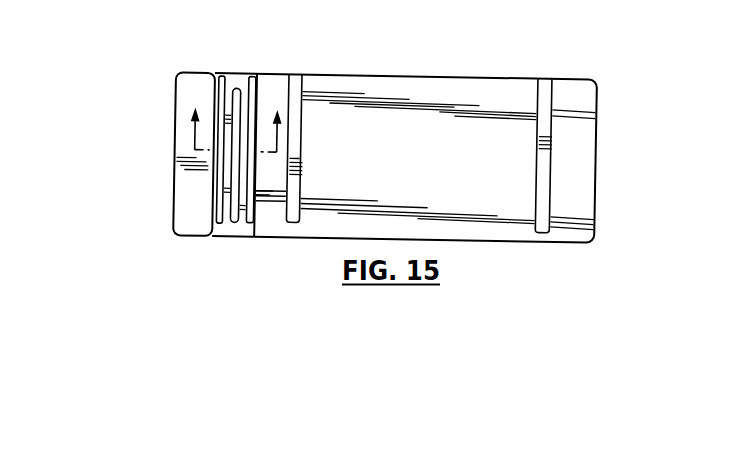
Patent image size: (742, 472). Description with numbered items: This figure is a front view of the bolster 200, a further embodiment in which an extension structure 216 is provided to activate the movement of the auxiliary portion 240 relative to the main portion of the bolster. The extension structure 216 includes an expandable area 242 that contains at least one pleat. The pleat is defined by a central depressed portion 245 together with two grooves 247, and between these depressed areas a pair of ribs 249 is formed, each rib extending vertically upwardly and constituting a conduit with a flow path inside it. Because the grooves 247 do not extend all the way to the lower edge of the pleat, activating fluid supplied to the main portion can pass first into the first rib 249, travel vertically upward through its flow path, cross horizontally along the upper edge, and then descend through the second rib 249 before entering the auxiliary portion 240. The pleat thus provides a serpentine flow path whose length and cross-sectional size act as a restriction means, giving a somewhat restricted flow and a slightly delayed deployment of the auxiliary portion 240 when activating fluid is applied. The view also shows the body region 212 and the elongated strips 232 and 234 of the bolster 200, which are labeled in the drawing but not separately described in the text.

The bolster 200 is at (468, 64).
The body 212 is at (452, 172).
The extension structure 216 is at (228, 248).
The first strip 232 is at (297, 153).
The second strip 234 is at (542, 163).
The auxiliary portion 240 is at (176, 146).
The expandable area 242 is at (219, 76).
The central depressed portion 245 is at (247, 108).
The grooves 247 is at (237, 112).
The ribs 249 is at (244, 211).